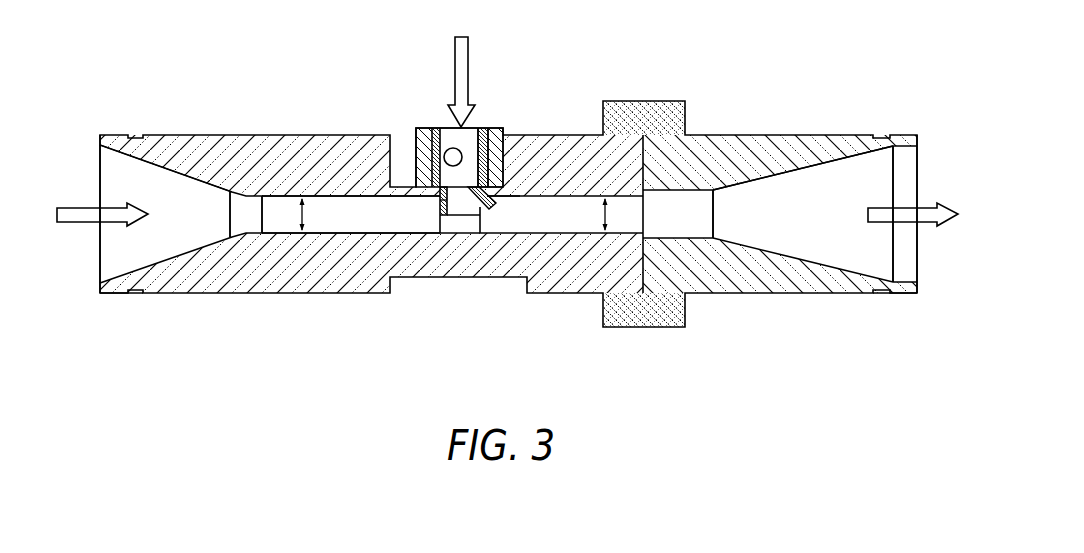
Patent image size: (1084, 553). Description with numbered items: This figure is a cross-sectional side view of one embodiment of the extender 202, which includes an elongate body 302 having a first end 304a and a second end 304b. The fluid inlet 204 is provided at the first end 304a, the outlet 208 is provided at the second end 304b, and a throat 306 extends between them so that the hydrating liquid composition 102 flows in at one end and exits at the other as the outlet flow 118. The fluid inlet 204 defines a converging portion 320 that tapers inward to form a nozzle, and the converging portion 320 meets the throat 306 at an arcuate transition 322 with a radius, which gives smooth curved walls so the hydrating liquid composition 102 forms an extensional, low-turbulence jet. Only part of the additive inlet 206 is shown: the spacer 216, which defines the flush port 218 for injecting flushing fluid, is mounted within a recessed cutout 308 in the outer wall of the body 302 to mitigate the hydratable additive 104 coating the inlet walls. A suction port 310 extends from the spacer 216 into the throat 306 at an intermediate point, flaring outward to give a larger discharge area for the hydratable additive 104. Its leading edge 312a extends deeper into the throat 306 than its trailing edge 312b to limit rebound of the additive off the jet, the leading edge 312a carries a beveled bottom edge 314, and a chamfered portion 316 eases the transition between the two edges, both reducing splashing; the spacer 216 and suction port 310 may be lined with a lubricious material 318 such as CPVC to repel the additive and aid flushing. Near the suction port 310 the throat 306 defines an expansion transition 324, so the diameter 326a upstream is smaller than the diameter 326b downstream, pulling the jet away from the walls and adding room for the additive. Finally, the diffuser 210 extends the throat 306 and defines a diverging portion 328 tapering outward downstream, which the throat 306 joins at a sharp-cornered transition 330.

The hydrating liquid composition 102 is at (82, 224).
The hydratable additive 104 is at (454, 62).
The outlet fluid flow 118 is at (912, 224).
The extender 202 is at (173, 74).
The fluid inlet 204 is at (95, 167).
The additive inlet 206 is at (513, 129).
The outlet 208 is at (900, 162).
The diffuser 210 is at (752, 134).
The spacer 216 is at (425, 127).
The flush port 218 is at (458, 149).
The elongate body 302 is at (275, 290).
The first end 304a is at (105, 308).
The second end 304b is at (913, 300).
The throat 306 is at (347, 200).
The cutout 308 is at (412, 186).
The suction port 310 is at (492, 184).
The leading edge 312a is at (434, 222).
The trailing edge 312b is at (491, 199).
The beveled bottom edge 314 is at (438, 203).
The chamfered portion 316 is at (466, 209).
The lubricious material 318 is at (484, 127).
The converging portion 320 is at (181, 178).
The arcuate transition 322 is at (245, 186).
The expansion transition 324 is at (456, 242).
The diameter upstream of the expansion transition 326a is at (300, 222).
The diameter downstream of the expansion transition 326b is at (606, 232).
The diverging portion 328 is at (818, 160).
The transition 330 is at (714, 181).